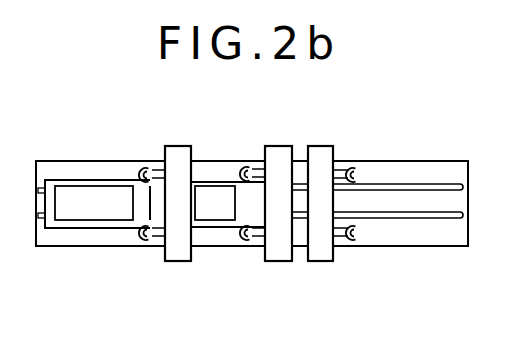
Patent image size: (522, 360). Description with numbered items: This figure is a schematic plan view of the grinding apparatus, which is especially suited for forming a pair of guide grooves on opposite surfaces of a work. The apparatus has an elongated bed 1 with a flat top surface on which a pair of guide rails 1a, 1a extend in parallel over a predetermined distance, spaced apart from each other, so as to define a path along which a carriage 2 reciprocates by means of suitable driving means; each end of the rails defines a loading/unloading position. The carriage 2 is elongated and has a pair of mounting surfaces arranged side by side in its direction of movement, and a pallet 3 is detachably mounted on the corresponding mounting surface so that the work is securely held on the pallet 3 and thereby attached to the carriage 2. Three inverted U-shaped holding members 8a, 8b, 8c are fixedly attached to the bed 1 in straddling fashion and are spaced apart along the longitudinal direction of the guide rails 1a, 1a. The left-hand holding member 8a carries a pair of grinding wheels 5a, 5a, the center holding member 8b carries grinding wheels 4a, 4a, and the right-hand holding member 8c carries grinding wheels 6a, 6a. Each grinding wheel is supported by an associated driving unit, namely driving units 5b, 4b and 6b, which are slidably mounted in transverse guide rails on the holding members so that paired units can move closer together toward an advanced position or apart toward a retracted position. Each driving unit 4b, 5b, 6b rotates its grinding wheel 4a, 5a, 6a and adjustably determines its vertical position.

The bed 1 is at (408, 230).
The guide rail 1a is at (396, 183).
The carriage 2 is at (70, 229).
The pallet 3 is at (215, 186).
The grinding wheel 4a is at (252, 169).
The driving unit 4b is at (237, 242).
The grinding wheel 5a is at (140, 168).
The driving unit 5b is at (137, 240).
The grinding wheel 6a is at (352, 166).
The driving unit 6b is at (362, 240).
The U-shaped holding member 8a is at (178, 262).
The U-shaped holding member 8b is at (278, 262).
The U-shaped holding member 8c is at (320, 262).